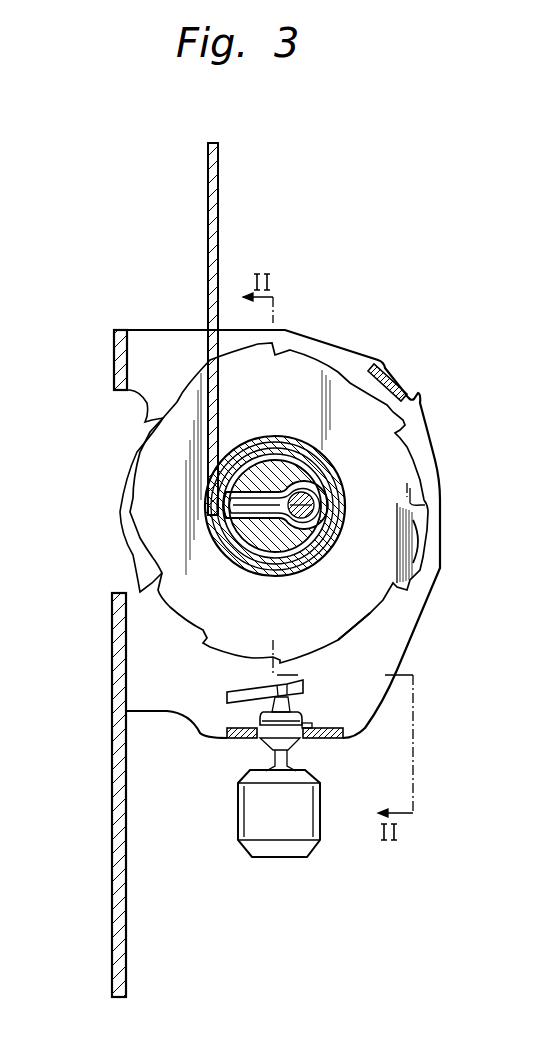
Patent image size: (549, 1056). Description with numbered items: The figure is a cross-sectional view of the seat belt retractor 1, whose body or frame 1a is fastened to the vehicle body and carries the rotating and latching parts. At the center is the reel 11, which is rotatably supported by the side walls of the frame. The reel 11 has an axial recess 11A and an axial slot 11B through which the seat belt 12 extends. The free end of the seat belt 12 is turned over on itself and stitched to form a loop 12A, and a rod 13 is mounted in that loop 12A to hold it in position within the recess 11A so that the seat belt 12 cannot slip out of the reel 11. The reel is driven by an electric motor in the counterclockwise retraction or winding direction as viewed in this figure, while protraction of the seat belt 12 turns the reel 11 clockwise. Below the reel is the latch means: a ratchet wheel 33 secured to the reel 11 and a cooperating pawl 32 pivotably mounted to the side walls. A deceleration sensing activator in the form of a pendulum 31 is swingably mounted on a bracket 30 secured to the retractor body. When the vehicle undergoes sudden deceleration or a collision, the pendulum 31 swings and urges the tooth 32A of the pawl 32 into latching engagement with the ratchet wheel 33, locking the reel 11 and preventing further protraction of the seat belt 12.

The retractor 1 is at (99, 524).
The body or frame 1a is at (118, 785).
The reel 11 is at (297, 472).
The axial recess 11A is at (362, 605).
The axial slot 11B is at (232, 482).
The seat belt 12 is at (226, 262).
The loop 12A is at (320, 508).
The rod 13 is at (300, 504).
The bracket 30 is at (339, 741).
The pendulum 31 is at (284, 853).
The pawl 32 is at (228, 696).
The tooth 32A is at (304, 685).
The ratchet wheel 33 is at (405, 563).